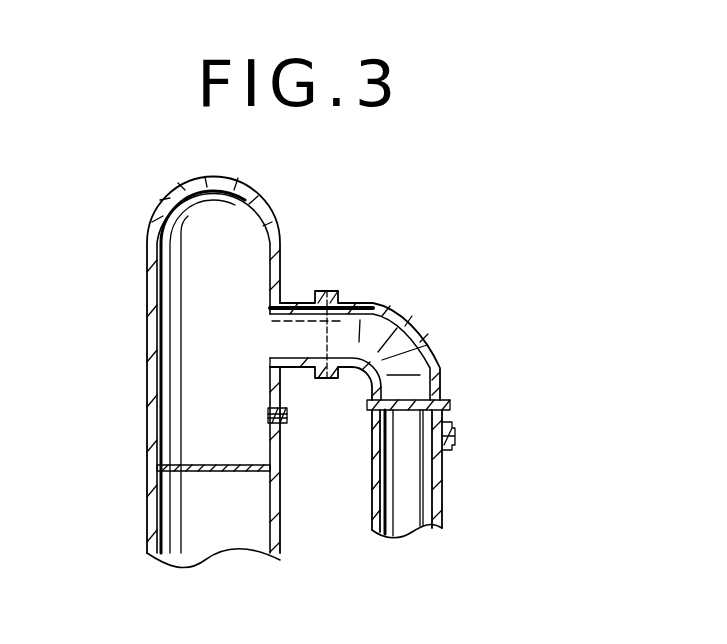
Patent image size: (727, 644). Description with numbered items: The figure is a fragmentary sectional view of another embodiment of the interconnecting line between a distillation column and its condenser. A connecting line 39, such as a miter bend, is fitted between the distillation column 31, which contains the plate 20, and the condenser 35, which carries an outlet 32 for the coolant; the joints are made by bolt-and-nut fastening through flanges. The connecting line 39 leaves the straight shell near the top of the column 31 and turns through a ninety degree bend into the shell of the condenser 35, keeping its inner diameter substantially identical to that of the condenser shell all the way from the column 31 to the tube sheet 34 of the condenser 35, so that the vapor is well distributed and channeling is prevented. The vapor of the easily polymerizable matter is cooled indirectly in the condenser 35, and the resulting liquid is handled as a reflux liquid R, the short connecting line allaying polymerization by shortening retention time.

The distillation column 31 is at (147, 375).
The plate 20 is at (222, 472).
The reflux liquid R is at (268, 413).
The connecting line 39 is at (423, 323).
The tube sheet 34 is at (370, 406).
The condenser 35 is at (442, 512).
The outlet of a coolant 32 is at (455, 435).